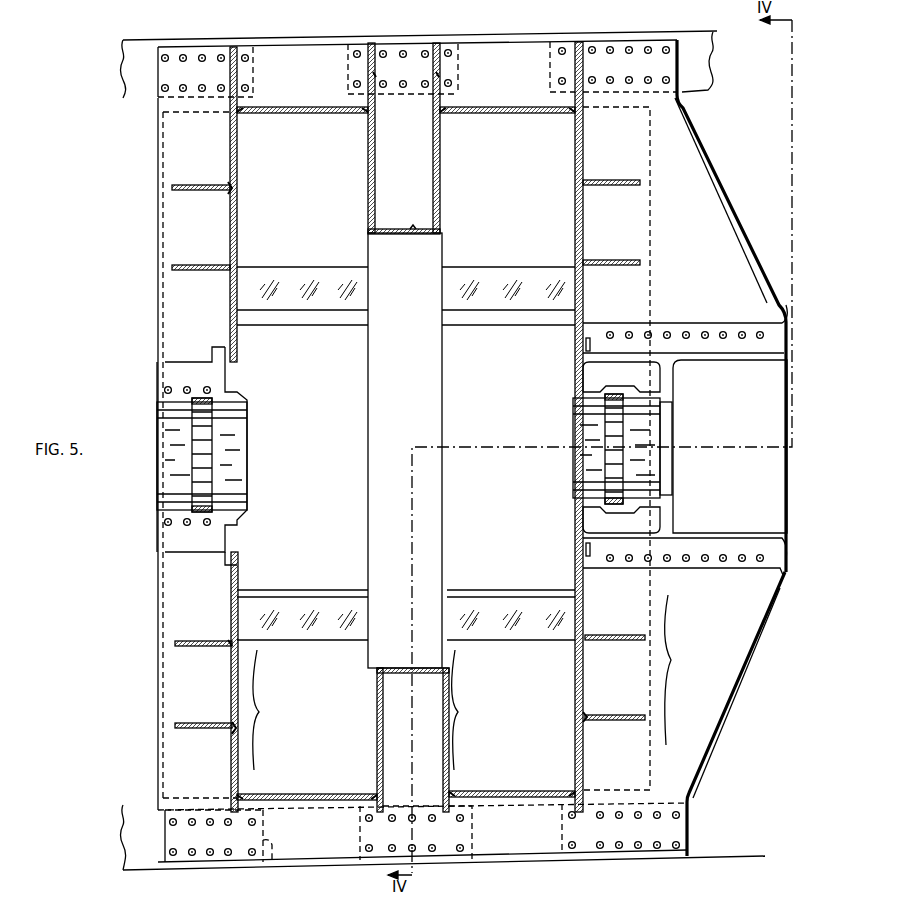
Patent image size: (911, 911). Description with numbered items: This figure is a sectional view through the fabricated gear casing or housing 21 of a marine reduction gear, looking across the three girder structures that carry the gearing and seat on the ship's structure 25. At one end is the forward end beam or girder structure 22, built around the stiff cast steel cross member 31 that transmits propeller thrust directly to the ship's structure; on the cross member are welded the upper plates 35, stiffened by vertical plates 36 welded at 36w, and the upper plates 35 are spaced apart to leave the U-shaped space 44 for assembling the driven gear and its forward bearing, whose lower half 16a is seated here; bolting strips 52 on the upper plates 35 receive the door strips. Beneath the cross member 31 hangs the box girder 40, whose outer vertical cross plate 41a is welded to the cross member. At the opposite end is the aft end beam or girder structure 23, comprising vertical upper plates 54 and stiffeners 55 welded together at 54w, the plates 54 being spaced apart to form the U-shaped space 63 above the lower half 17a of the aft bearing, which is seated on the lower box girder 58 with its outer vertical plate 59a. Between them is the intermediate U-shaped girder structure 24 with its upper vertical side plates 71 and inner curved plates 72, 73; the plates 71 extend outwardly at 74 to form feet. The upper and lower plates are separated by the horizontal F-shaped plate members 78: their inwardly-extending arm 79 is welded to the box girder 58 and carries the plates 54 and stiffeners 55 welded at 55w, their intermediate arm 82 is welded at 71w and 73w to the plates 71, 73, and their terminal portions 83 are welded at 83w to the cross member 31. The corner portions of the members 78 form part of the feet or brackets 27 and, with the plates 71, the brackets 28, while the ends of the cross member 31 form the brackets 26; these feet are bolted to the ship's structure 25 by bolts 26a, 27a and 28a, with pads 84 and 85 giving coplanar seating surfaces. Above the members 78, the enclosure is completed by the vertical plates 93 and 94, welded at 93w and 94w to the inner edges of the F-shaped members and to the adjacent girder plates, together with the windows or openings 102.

The lower half of forward bearing 16a is at (575, 413).
The lower half of bearing 17a is at (248, 426).
The housing 21 is at (756, 525).
The forward end beam or girder structure 22 is at (687, 670).
The aft end beam or girder structure 23 is at (271, 710).
The intermediate U-shaped beam or girder structure 24 is at (469, 710).
The ship's structure 25 is at (718, 32).
The feet or brackets 26 is at (610, 44).
The bolts 26a is at (656, 852).
The feet or brackets 27 is at (210, 49).
The bolts 27a is at (194, 853).
The brackets or feet 28 is at (418, 48).
The bolts 28a is at (392, 856).
The cross member 31 is at (722, 698).
The upper plates 35 is at (576, 692).
The vertical plates 36 is at (618, 714).
The weld 36w is at (590, 726).
The box girder 40 is at (638, 233).
The outer vertical cross plate 41a is at (655, 272).
The U-shaped space 44 is at (578, 548).
The bolting strips 52 is at (591, 348).
The vertical upper plates 54 is at (239, 229).
The weld 54w is at (229, 192).
The stiffeners 55 is at (193, 266).
The weld 55w is at (222, 647).
The lower box girder 58 is at (160, 590).
The outer vertical plate 59a is at (158, 297).
The U-shaped space 63 is at (240, 551).
The vertical side plates 71 is at (376, 160).
The weld 71w is at (440, 75).
The inner curved plate 72 is at (380, 386).
The inner curved plate 73 is at (396, 229).
The weld 73w is at (413, 234).
The outwardly extending plate portions 74 is at (458, 68).
The F-shaped plate members 78 is at (292, 62).
The inwardly-extending arm 79 is at (170, 333).
The intermediate arm 82 is at (438, 202).
The terminal portions 83 is at (528, 60).
The weld 83w is at (552, 50).
The pads 84 is at (272, 858).
The pads 85 is at (466, 860).
The vertical plates 93 is at (291, 114).
The weld 93w is at (242, 797).
The vertical plates 94 is at (488, 114).
The weld 94w is at (453, 793).
The window 102 is at (407, 589).